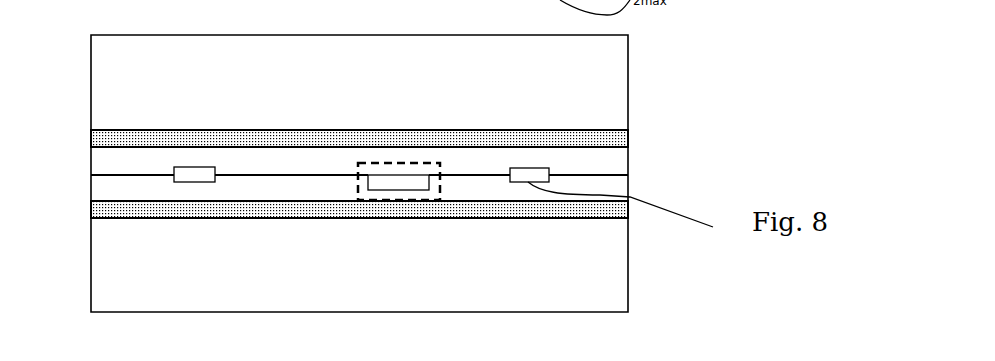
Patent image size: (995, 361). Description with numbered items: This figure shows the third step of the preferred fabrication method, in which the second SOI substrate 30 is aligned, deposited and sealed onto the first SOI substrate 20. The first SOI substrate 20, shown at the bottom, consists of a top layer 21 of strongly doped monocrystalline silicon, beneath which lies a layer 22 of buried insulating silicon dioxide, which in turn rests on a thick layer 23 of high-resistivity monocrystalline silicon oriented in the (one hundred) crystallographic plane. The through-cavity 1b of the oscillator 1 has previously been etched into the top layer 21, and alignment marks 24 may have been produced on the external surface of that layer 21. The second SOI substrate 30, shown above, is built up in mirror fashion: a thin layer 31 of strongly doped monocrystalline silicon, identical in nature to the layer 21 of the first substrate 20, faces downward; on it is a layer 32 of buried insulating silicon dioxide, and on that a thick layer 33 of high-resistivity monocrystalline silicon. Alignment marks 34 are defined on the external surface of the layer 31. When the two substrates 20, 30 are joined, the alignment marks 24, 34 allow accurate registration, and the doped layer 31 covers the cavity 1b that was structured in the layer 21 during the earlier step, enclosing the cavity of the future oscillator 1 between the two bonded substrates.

The oscillator 1 is at (350, 183).
The through-cavity 1b is at (399, 174).
The alignment marks 34 is at (521, 161).
The second SOI substrate 30 is at (404, 94).
The layer of monocrystalline silicon 33 is at (620, 84).
The layer of buried insulating silicon dioxide 32 is at (620, 137).
The layer of monocrystalline silicon 31 is at (600, 157).
The first SOI substrate 20 is at (388, 225).
The layer of monocrystalline silicon 21 is at (612, 183).
The layer of buried insulating silicon dioxide 22 is at (607, 210).
The layer of monocrystalline silicon 23 is at (590, 292).
The alignment marks 24 is at (532, 185).